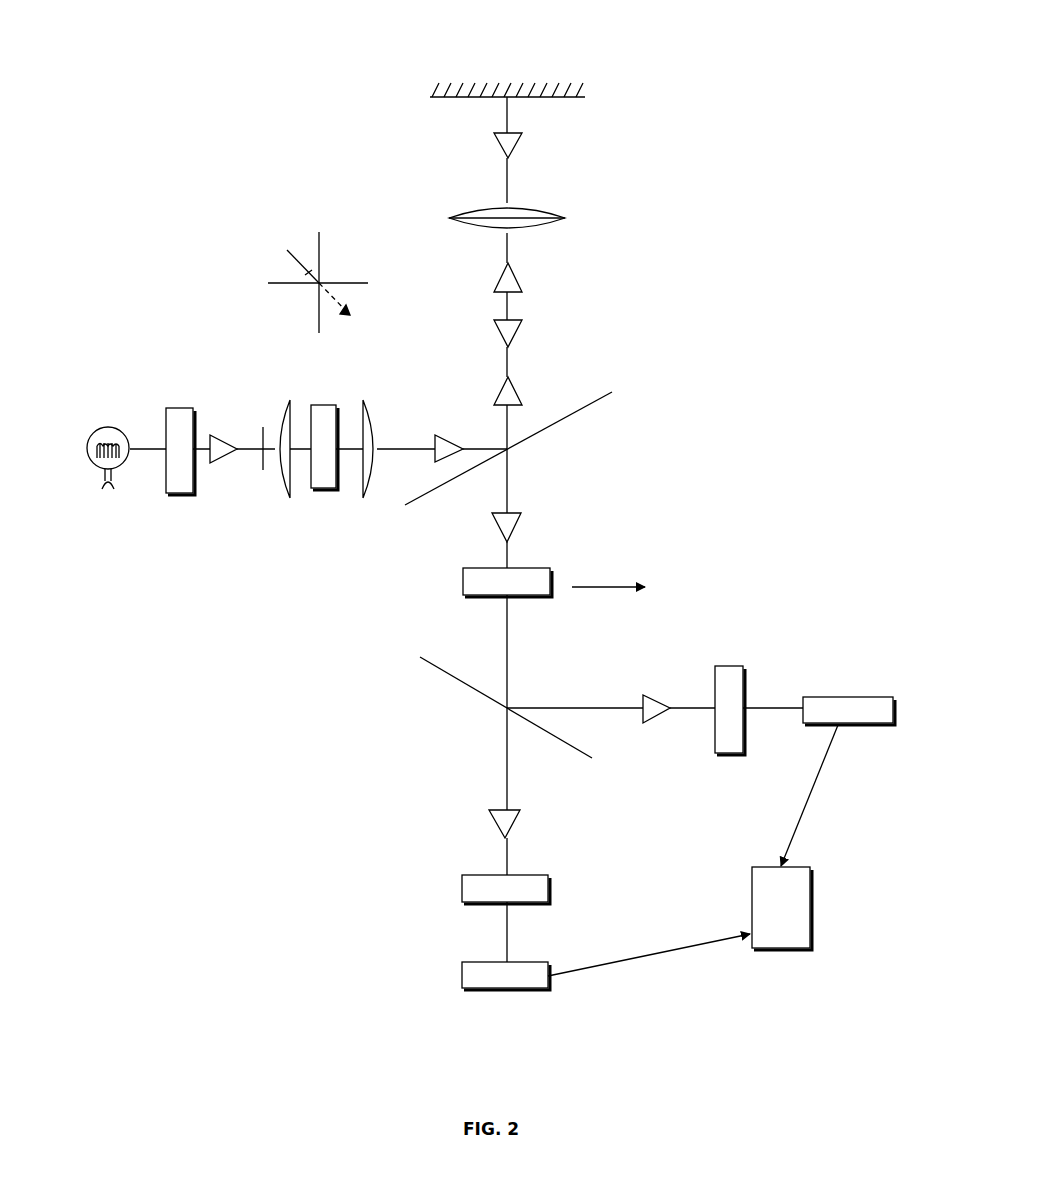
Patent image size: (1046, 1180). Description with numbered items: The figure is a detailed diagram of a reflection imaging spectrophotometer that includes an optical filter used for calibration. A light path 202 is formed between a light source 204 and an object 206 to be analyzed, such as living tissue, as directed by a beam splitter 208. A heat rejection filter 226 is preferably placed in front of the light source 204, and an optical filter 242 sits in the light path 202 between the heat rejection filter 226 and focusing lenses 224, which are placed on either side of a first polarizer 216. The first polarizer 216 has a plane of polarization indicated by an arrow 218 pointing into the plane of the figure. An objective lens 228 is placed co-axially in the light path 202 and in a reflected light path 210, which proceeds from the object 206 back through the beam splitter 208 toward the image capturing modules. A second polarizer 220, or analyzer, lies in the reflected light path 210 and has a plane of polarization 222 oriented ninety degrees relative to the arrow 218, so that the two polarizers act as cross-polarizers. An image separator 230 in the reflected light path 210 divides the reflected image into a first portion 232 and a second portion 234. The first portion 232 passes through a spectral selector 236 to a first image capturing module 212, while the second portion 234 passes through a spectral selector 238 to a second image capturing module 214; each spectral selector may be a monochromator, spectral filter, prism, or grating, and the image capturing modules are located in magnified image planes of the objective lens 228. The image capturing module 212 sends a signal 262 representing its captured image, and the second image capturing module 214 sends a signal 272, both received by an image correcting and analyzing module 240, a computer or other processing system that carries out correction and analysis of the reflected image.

The object 206 is at (526, 49).
The reflected light path 210 is at (504, 342).
The objective lens 228 is at (554, 187).
The light path 202 is at (389, 358).
The beam splitter 208 is at (573, 446).
The arrow 218 is at (318, 273).
The optical filter 242 is at (263, 420).
The first polarizer 216 is at (369, 417).
The light source 204 is at (108, 416).
The heat rejection filter 226 is at (132, 496).
The focusing lenses 224 is at (362, 503).
The second polarizer 220 is at (438, 601).
The plane of polarization 222 is at (608, 605).
The image separator 230 is at (461, 707).
The spectral selector 238 is at (754, 669).
The second image capturing module 214 is at (876, 669).
The second portion 234 is at (700, 752).
The signal 272 is at (815, 795).
The first portion 232 is at (450, 807).
The spectral selector 236 is at (422, 906).
The image capturing module 212 is at (420, 1001).
The signal 262 is at (649, 970).
The image correcting and analyzing module 240 is at (834, 908).